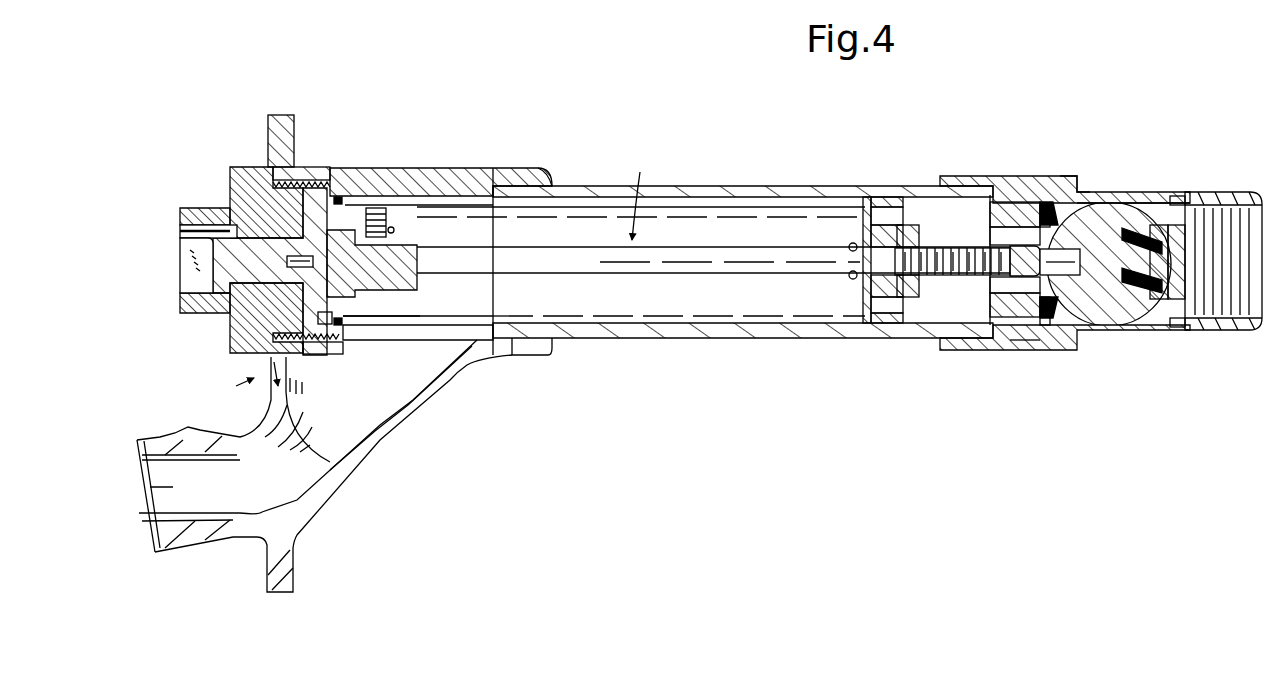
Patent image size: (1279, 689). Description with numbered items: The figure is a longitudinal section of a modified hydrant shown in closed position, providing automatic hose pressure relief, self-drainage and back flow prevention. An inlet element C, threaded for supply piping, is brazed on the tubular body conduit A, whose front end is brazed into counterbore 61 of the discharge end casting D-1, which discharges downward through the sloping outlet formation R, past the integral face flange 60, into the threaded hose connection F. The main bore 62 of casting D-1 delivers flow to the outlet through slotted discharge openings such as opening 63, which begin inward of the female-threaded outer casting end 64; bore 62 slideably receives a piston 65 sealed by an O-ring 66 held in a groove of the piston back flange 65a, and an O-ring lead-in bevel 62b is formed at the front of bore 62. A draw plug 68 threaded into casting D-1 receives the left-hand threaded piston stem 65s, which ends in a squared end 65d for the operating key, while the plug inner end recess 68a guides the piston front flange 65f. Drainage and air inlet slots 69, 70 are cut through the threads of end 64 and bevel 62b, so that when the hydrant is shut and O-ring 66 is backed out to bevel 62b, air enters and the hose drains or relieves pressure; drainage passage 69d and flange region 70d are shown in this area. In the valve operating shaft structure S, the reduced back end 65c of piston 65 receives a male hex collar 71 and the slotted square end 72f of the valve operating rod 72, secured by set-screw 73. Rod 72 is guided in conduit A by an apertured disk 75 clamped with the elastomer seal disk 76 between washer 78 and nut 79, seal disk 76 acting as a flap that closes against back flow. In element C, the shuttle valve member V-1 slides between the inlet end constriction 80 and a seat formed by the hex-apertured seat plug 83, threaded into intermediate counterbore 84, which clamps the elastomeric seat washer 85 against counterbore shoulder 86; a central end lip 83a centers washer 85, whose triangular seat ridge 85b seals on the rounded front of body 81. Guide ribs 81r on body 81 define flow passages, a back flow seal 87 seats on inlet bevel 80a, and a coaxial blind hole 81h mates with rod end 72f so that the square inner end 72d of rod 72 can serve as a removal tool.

The face flange 60 is at (293, 548).
The counterbore 61 is at (520, 190).
The main bore 62 is at (487, 180).
The O-ring lead-in bevel 62b is at (340, 198).
The bore discharge opening 63 is at (473, 332).
The female-threaded outer casting end 64 is at (285, 205).
The piston 65 is at (297, 293).
The piston back flange 65a is at (380, 326).
The reduced back end 65c is at (370, 292).
The squared end 65d is at (180, 258).
The piston front flange 65f is at (322, 383).
The piston stem 65s is at (180, 232).
The O-ring 66 is at (338, 326).
The draw plug 68 is at (228, 183).
The plug inner end recess 68a is at (320, 182).
The drainage and air inlet slot 69 is at (303, 352).
The flow passage 69d is at (270, 358).
The drainage and air inlet slot 70 is at (305, 170).
The clamp flange 70d is at (267, 150).
The male hex collar 71 is at (396, 235).
The valve operating rod 72 is at (735, 256).
The valve-member-contacting inner end 72d is at (1018, 248).
The slotted square section rod end 72f is at (287, 262).
The set-screw 73 is at (382, 205).
The disk 75 is at (875, 195).
The seal disk 76 is at (860, 280).
The washer 78 is at (860, 238).
The nut 79 is at (900, 288).
The inlet end constriction 80 is at (1205, 205).
The inlet bevel 80a is at (1176, 198).
The valve element body 81 is at (1088, 318).
The coaxial blind hole 81h is at (1060, 266).
The guide ribs 81r is at (1112, 315).
The seat plug 83 is at (988, 218).
The central end lip 83a is at (1000, 290).
The intermediate counterbore 84 is at (1045, 200).
The seat washer 85 is at (1046, 198).
The seat ridge 85b is at (1025, 345).
The counterbore shoulder 86 is at (1072, 188).
The back flow seal 87 is at (1150, 215).
The tubular body conduit A is at (707, 184).
The inlet element C is at (945, 172).
The discharge end casting D-1 is at (550, 172).
The threaded hose connection F is at (240, 550).
The sloping outlet formation R is at (372, 462).
The valve operating shaft structure S is at (628, 193).
The shuttle valve member V-1 is at (1120, 200).